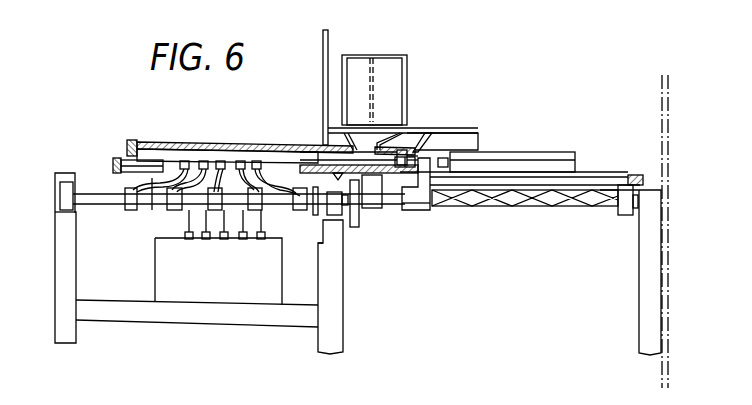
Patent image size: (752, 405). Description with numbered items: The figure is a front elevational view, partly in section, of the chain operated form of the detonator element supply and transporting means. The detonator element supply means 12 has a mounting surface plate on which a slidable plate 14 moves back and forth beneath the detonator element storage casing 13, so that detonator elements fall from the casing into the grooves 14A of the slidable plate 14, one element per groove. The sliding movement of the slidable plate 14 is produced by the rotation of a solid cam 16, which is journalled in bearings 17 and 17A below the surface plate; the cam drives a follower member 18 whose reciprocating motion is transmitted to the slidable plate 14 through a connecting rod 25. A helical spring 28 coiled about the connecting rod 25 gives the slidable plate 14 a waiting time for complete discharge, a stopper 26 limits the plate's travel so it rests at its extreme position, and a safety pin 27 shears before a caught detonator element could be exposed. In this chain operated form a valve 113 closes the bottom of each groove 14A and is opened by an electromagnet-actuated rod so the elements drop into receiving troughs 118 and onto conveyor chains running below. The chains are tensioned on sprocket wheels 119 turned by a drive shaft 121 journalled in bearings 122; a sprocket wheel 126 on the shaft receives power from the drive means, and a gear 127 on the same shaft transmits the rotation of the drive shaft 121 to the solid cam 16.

The detonator element supply means 12 is at (630, 175).
The detonator element storage casing 13 is at (407, 100).
The slidable plate 14 is at (280, 145).
The grooves 14A is at (178, 143).
The solid cam 16 is at (495, 198).
The bearing 17 is at (369, 208).
The bearing 17A is at (630, 216).
The follower member 18 is at (420, 210).
The connecting rod 25 is at (438, 195).
The stopper 26 is at (123, 143).
The safety pin 27 is at (452, 158).
The helical spring 28 is at (418, 150).
The valve 113 is at (242, 147).
The receiving trough 118 is at (134, 200).
The sprocket wheel 119 is at (129, 208).
The drive shaft 121 is at (88, 198).
The bearing 122 is at (66, 181).
The sprocket wheel 126 is at (316, 216).
The gear 127 is at (343, 232).